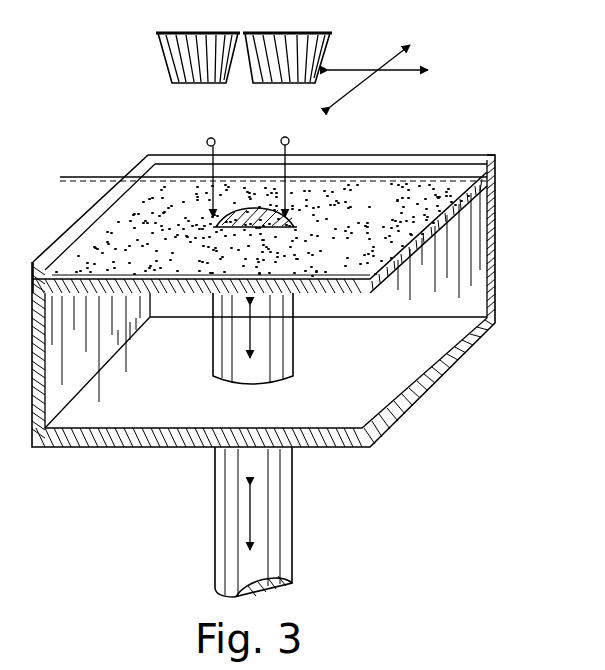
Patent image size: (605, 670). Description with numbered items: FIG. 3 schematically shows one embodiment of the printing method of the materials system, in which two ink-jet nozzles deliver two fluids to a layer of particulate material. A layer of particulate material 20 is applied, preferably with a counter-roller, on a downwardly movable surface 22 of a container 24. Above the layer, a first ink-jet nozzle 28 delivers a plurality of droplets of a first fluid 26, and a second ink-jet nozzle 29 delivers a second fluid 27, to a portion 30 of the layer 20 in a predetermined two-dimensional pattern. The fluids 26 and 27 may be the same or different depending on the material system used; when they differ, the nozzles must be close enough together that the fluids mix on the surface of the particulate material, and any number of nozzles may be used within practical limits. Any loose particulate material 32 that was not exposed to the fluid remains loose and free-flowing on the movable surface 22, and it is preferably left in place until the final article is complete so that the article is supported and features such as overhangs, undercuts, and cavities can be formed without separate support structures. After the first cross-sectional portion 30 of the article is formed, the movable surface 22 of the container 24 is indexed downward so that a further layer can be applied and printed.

The layer of particulate material 20 is at (384, 188).
The downwardly movable surface 22 is at (408, 262).
The container 24 is at (495, 213).
The first fluid 26 is at (289, 142).
The second fluid 27 is at (207, 140).
The first ink-jet nozzle 28 is at (322, 50).
The second ink-jet nozzle 29 is at (163, 60).
The portion of the layer 30 is at (296, 226).
The loose particulate material 32 is at (187, 186).